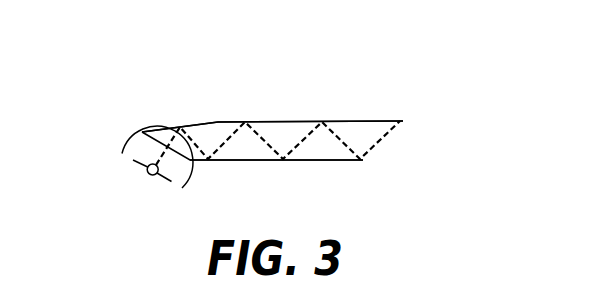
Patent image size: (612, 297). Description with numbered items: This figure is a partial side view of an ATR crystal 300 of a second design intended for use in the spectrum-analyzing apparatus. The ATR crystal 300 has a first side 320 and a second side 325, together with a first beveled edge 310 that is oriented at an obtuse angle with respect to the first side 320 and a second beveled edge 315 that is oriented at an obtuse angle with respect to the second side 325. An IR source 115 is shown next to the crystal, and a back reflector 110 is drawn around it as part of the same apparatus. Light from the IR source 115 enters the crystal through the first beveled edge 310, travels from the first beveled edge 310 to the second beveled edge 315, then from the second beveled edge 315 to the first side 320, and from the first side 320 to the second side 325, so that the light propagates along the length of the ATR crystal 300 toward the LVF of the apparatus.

The ATR crystal 300 is at (246, 121).
The first beveled edge 310 is at (149, 137).
The second beveled edge 315 is at (165, 128).
The first side 320 is at (235, 160).
The second side 325 is at (223, 121).
The back reflector 110 is at (134, 179).
The IR source 115 is at (152, 175).